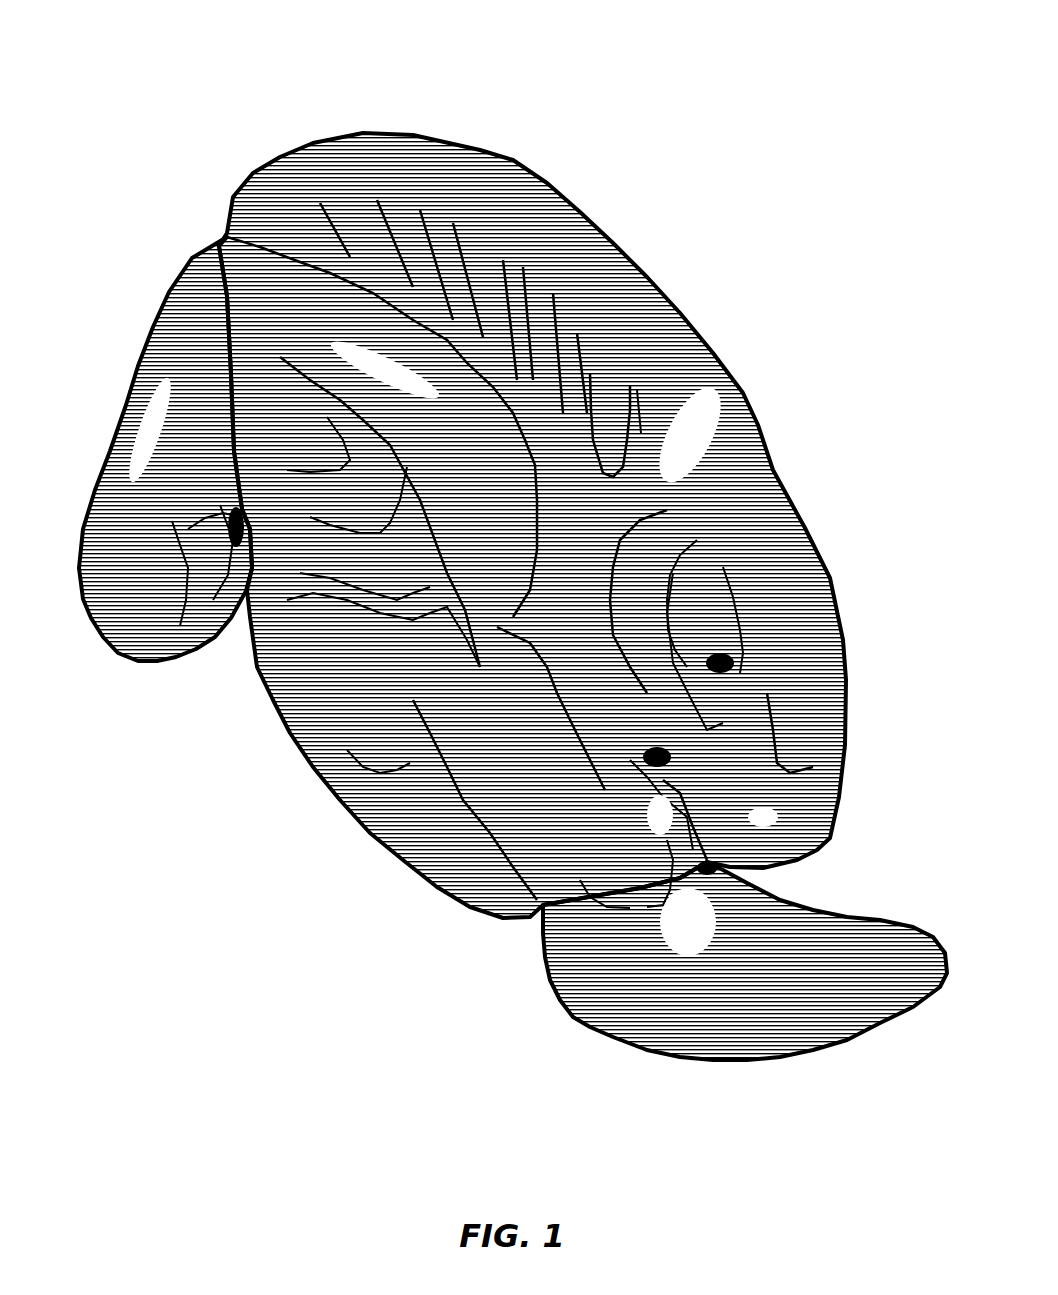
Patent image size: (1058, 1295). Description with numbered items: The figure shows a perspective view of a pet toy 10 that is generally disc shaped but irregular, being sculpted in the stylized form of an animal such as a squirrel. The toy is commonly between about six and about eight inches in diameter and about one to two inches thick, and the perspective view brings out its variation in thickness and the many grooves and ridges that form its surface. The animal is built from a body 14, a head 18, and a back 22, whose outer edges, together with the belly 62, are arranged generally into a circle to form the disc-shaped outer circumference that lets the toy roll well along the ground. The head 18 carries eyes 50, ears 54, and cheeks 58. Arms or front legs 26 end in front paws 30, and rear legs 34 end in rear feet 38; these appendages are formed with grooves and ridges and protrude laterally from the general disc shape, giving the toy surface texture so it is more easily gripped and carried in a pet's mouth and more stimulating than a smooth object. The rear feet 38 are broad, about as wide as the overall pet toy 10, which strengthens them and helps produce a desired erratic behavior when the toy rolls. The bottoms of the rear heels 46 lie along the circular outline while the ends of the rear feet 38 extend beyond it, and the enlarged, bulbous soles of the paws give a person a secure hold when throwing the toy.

The pet toy 10 is at (613, 315).
The body 14 is at (365, 715).
The head 18 is at (802, 627).
The back 22 is at (405, 207).
The arms 26 is at (325, 300).
The front paws 30 is at (228, 237).
The rear legs 34 is at (503, 808).
The rear feet 38 is at (140, 590).
The rear heels 46 is at (180, 313).
The eyes 50 is at (728, 648).
The ears 54 is at (625, 410).
The cheeks 58 is at (687, 533).
The belly 62 is at (398, 810).